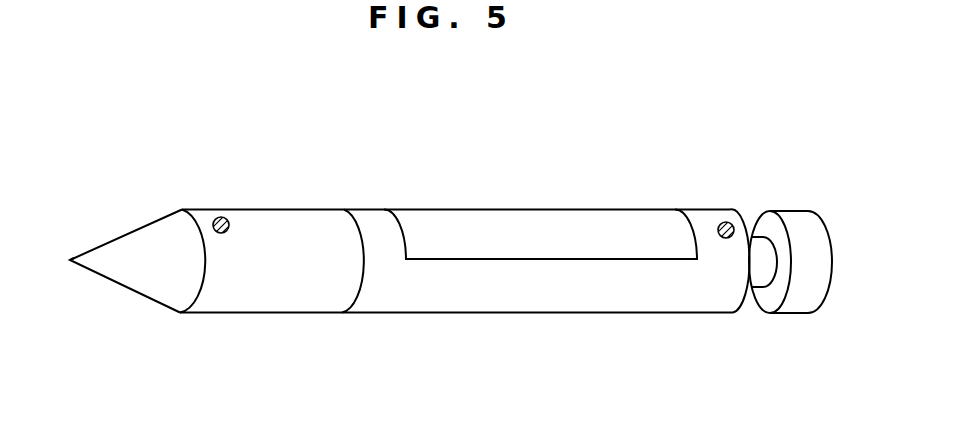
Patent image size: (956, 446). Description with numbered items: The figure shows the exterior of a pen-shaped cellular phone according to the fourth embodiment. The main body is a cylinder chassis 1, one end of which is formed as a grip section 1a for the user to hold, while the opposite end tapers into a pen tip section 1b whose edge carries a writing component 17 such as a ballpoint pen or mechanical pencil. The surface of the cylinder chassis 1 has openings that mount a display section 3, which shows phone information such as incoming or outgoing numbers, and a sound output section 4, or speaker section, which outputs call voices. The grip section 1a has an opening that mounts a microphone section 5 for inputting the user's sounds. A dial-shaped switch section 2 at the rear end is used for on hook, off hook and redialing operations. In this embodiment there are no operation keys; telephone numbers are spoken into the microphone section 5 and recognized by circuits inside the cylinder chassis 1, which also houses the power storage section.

The cylinder chassis 1 is at (459, 340).
The grip section 1a is at (286, 302).
The pen tip section 1b is at (148, 297).
The dial-shaped switch section 2 is at (786, 210).
The display section 3 is at (503, 228).
The sound output section 4 is at (727, 220).
The microphone section 5 is at (222, 217).
The writing component 17 is at (66, 250).